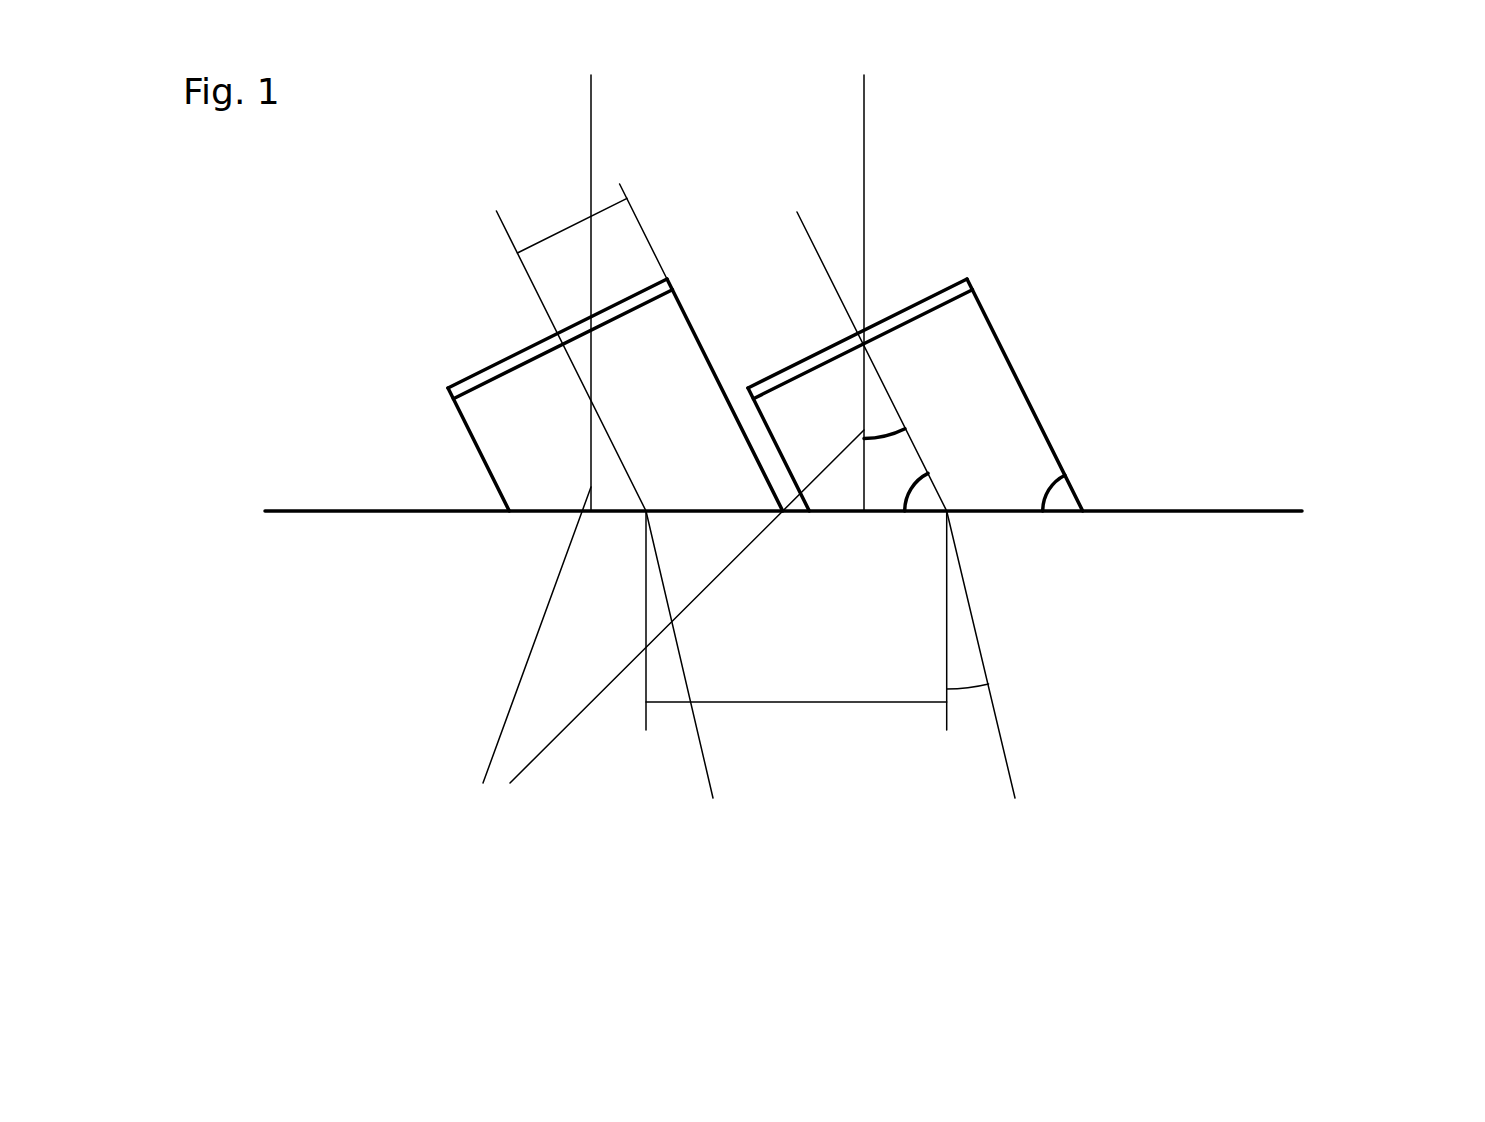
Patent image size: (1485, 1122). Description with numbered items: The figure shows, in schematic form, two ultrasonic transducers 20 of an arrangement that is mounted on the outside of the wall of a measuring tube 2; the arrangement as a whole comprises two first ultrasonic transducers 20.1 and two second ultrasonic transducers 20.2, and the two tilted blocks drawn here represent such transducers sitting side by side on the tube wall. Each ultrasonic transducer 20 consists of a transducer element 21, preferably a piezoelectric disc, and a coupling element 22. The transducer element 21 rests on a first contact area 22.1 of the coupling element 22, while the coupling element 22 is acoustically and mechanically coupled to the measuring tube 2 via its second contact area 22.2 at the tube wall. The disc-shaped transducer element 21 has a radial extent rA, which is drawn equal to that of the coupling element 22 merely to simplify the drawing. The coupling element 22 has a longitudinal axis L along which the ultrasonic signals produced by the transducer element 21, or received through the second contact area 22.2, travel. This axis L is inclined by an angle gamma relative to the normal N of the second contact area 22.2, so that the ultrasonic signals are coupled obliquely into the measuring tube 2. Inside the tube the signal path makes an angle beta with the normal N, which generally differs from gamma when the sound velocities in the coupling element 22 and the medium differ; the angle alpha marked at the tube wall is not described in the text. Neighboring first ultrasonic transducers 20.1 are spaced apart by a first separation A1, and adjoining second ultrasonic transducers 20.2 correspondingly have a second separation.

The measuring tube 2 is at (1275, 511).
The ultrasonic transducer 20 is at (455, 455).
The first ultrasonic transducer 20.1 is at (453, 483).
The second ultrasonic transducer 20.2 is at (1085, 487).
The transducer element 21 is at (462, 389).
The coupling element 22 is at (810, 402).
The first contact area 22.1 is at (648, 303).
The second contact area 22.2 is at (565, 511).
The longitudinal axis L is at (533, 292).
The radial extent rA is at (563, 209).
The normal N is at (662, 632).
The first separation A1 is at (795, 730).
The angle alpha is at (917, 487).
The angle β beta is at (830, 654).
The angle γ gamma is at (878, 402).